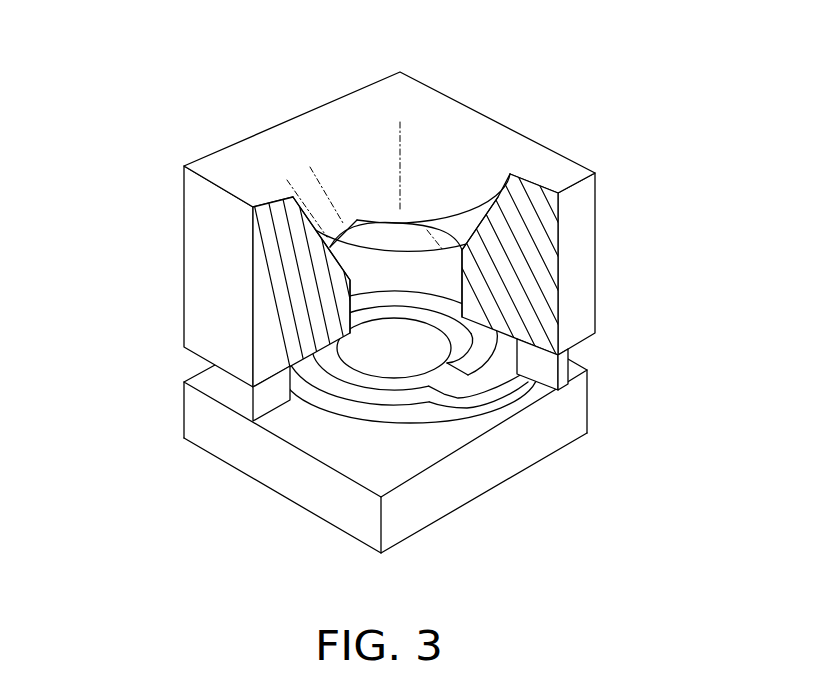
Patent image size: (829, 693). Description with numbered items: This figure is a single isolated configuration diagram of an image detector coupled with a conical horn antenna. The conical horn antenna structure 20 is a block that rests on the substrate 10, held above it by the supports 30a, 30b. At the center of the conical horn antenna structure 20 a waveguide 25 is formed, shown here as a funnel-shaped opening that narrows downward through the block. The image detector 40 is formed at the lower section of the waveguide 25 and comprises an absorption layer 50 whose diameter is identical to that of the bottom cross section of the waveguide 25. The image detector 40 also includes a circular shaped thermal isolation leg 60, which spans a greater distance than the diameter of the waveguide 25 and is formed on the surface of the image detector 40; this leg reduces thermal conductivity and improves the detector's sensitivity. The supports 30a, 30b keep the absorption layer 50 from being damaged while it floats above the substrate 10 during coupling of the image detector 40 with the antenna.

The substrate 10 is at (190, 434).
The conical horn antenna structure 20 is at (230, 173).
The waveguide 25 is at (470, 170).
The support 30a is at (227, 383).
The support 30b is at (568, 360).
The image detector 40 is at (510, 395).
The absorption layer 50 is at (377, 358).
The thermal isolation leg 60 is at (458, 400).